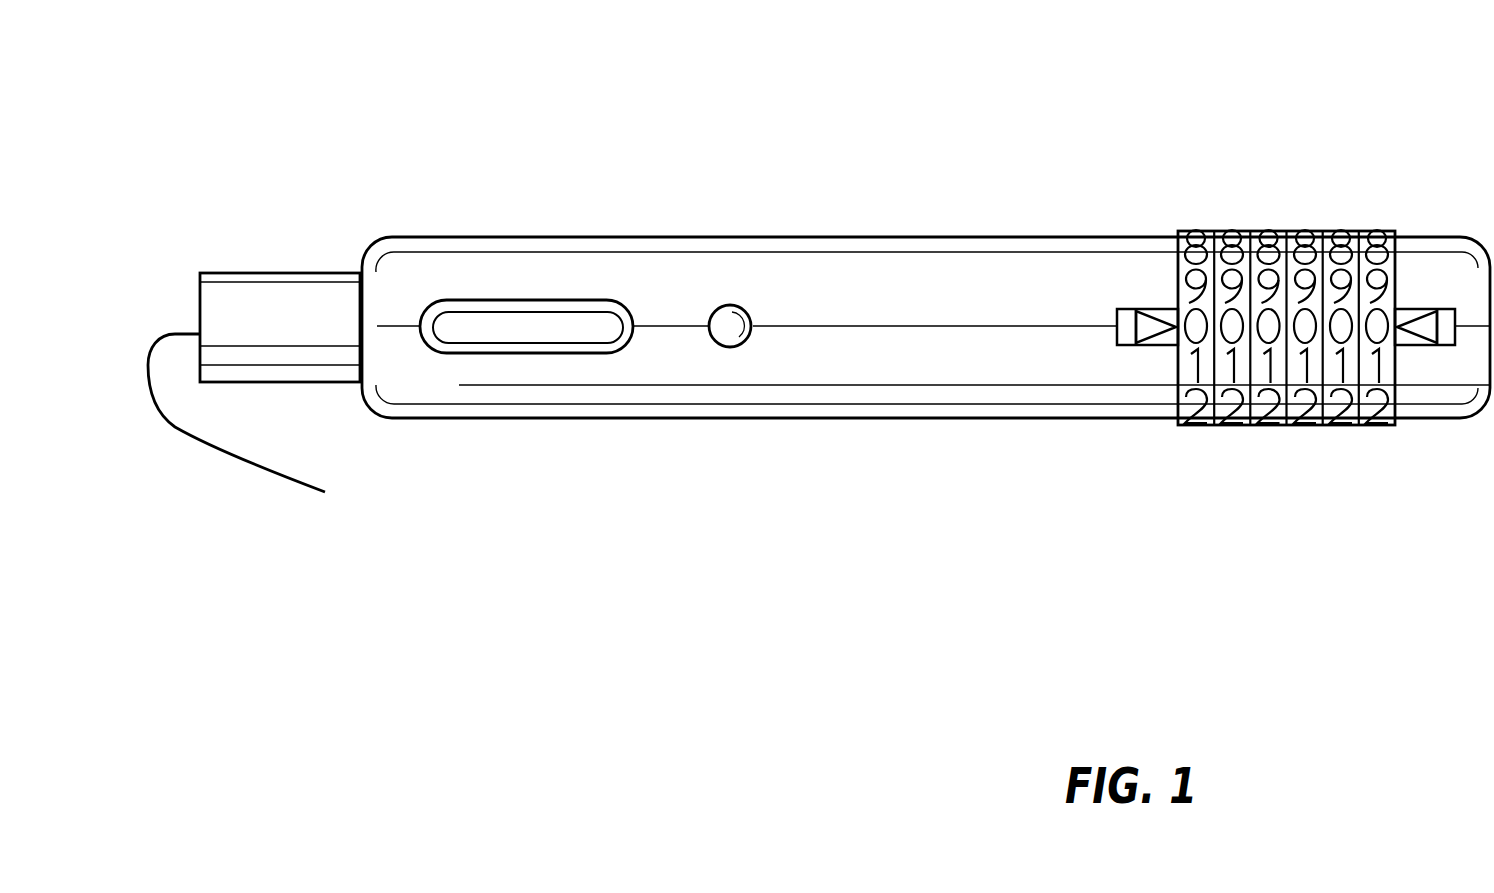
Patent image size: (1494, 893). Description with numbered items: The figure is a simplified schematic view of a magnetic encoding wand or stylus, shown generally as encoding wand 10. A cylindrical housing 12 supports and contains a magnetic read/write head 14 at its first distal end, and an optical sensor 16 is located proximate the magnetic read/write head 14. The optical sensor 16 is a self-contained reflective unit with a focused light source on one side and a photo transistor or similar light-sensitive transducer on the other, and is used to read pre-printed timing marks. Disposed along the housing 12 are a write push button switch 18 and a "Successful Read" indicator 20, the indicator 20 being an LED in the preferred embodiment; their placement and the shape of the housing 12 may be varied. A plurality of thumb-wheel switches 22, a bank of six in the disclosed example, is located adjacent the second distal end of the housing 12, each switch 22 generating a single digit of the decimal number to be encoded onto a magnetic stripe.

The encoding wand 10 is at (1363, 200).
The cylindrical housing 12 is at (897, 213).
The magnetic read/write head 14 is at (297, 273).
The optical sensor 16 is at (253, 427).
The write push button switch 18 is at (468, 325).
The "Successful Read" indicator 20 is at (734, 341).
The thumb-wheel switches 22 is at (1262, 250).